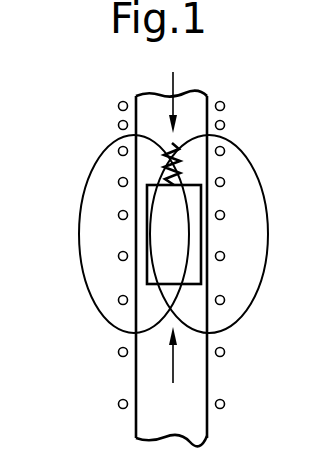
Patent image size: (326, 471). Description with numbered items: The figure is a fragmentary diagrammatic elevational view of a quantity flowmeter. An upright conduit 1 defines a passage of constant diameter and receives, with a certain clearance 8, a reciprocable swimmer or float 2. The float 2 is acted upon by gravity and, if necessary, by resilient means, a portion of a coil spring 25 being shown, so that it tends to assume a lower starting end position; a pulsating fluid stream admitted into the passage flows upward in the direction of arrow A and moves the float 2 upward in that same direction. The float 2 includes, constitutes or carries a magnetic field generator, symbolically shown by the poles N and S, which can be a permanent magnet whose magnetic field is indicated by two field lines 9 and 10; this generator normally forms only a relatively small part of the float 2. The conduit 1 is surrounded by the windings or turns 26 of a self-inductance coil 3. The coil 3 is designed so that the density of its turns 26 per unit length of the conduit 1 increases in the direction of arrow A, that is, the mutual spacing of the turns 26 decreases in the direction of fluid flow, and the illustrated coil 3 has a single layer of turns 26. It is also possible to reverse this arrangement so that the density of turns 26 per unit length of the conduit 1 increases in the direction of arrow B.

The conduit 1 is at (208, 428).
The coil spring 25 is at (148, 107).
The field line 9 is at (98, 155).
The field line 10 is at (270, 230).
The float 2 is at (197, 190).
The clearance 8 is at (142, 237).
The self-inductance coil 3 is at (232, 398).
The turns 26 is at (225, 351).
The arrow A is at (173, 367).
The arrow B is at (175, 100).